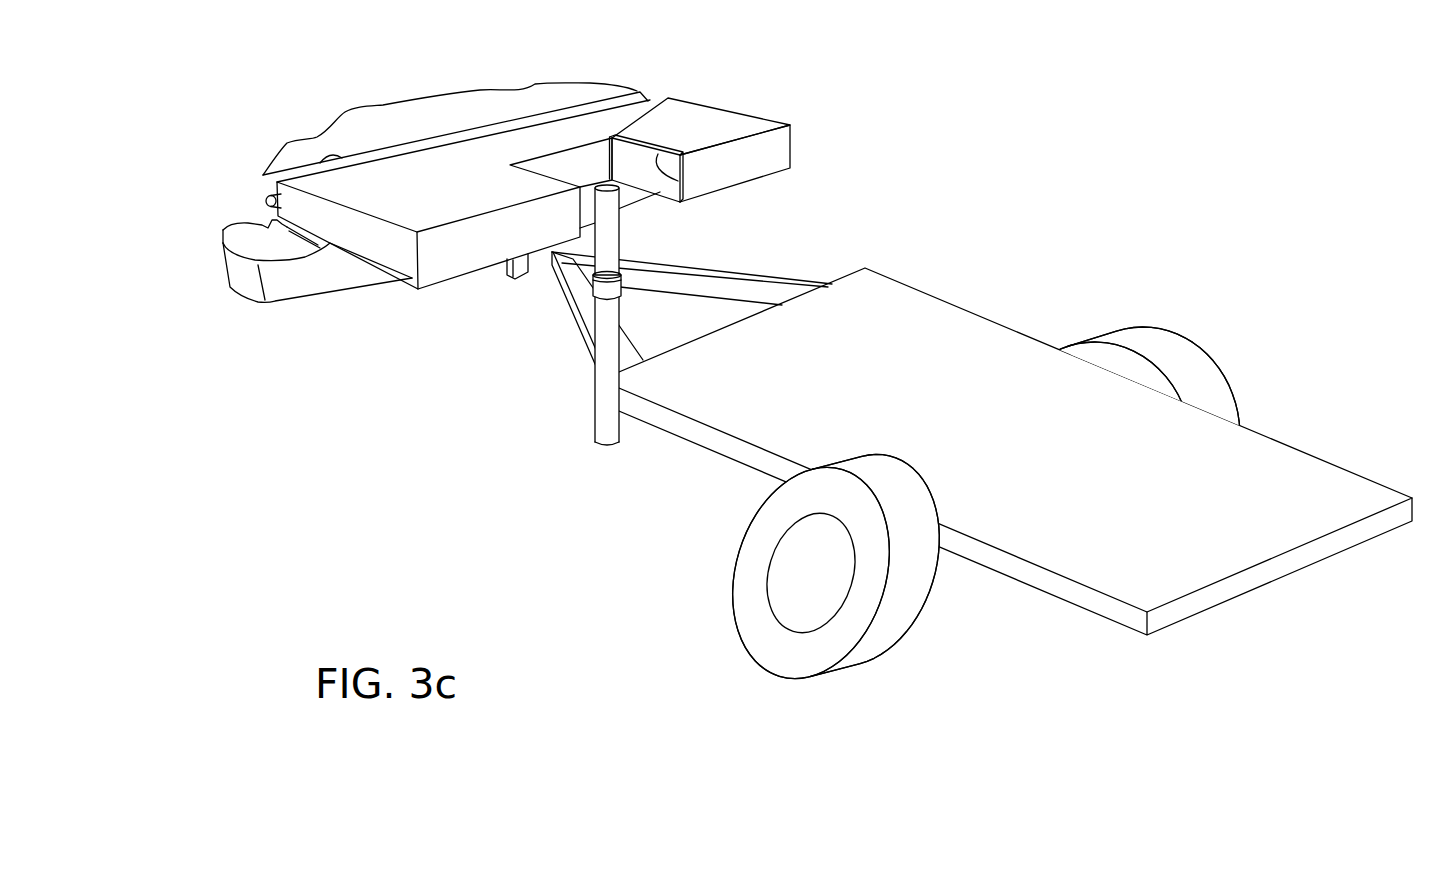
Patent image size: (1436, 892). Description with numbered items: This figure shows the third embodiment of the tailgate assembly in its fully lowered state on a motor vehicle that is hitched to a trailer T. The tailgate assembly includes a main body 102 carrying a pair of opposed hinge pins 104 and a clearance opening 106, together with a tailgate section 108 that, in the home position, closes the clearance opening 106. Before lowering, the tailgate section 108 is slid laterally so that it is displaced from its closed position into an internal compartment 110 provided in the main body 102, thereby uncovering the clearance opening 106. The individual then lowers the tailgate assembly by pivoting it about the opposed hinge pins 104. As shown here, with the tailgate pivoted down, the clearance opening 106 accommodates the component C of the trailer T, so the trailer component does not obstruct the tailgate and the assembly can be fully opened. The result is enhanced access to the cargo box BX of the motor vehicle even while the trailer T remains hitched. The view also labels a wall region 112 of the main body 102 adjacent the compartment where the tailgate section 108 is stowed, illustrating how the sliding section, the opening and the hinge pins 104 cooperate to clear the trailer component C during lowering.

The cargo box BX is at (440, 118).
The opposed hinge pins 104 is at (266, 203).
The clearance opening 106 is at (577, 168).
The tailgate section 108 is at (638, 163).
The main body 102 is at (730, 128).
The side wall of housing 112 is at (768, 152).
The internal compartment 110 is at (658, 156).
The component of the trailer C is at (607, 240).
The trailer T is at (968, 365).